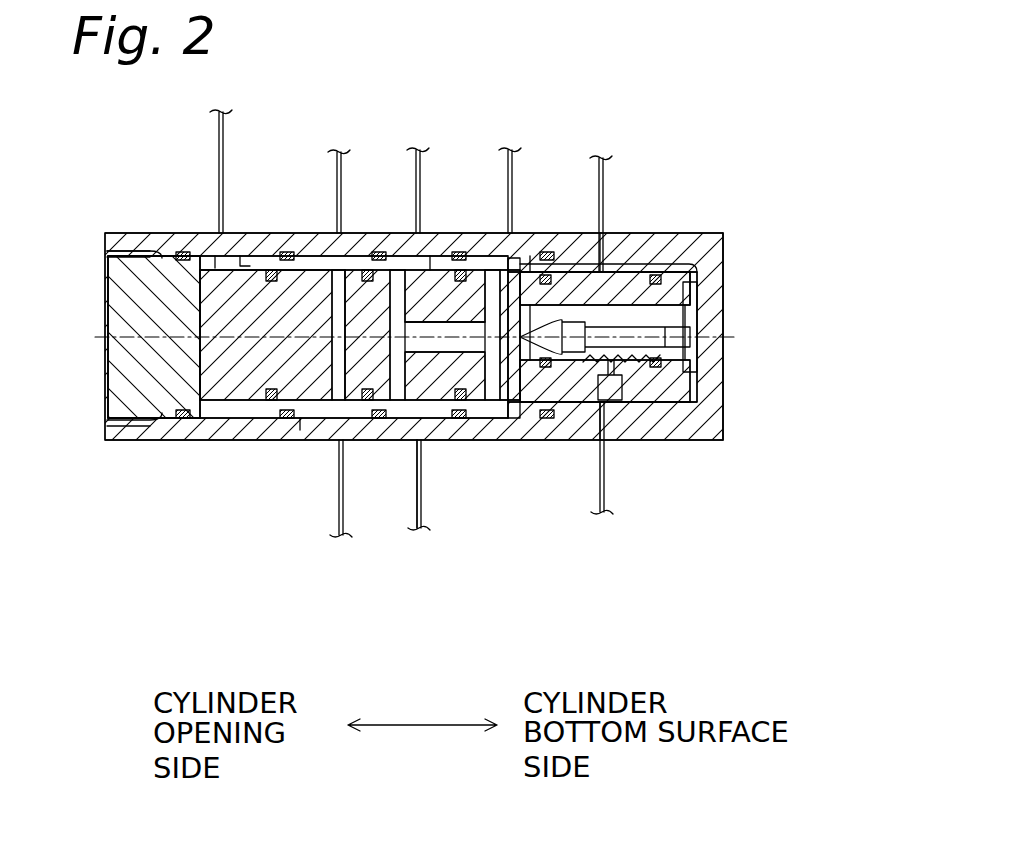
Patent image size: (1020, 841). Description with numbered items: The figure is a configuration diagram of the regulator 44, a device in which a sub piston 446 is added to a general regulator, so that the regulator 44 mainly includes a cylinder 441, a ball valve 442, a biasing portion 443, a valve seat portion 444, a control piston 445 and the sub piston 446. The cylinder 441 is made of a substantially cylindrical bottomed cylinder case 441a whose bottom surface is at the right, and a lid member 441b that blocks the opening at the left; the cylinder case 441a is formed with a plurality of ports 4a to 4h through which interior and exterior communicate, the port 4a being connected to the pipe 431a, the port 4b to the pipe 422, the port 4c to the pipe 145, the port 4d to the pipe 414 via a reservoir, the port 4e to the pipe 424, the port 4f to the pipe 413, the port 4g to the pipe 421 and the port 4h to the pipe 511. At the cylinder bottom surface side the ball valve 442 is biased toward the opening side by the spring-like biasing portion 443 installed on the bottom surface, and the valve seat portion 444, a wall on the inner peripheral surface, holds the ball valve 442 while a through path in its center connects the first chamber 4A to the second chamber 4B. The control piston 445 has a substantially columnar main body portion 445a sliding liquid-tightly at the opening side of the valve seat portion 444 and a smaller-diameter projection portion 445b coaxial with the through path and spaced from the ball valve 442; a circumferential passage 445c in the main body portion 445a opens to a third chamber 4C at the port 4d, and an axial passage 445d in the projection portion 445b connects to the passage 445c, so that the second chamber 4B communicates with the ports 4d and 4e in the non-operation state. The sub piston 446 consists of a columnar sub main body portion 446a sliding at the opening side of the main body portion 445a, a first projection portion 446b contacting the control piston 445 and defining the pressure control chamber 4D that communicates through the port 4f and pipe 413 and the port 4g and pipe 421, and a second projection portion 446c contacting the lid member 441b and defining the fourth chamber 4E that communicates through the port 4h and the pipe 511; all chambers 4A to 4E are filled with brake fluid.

The regulator 44 is at (790, 384).
The cylinder 441 is at (800, 263).
The cylinder case 441a is at (690, 244).
The lid member 441b is at (118, 277).
The ball valve 442 is at (600, 402).
The biasing portion 443 is at (660, 365).
The valve seat portion 444 is at (575, 262).
The control piston 445 is at (563, 645).
The main body portion 445a is at (348, 383).
The projection portion 445b is at (527, 372).
The passage 445c is at (402, 383).
The passage 445d is at (433, 367).
The sub piston 446 is at (196, 572).
The sub main body portion 446a is at (235, 370).
The first projection portion 446b is at (272, 385).
The second projection portion 446c is at (140, 395).
The first chamber 4A is at (680, 335).
The second chamber 4B is at (535, 262).
The third chamber 4C is at (438, 262).
The pressure control chamber 4D is at (273, 268).
The fourth chamber 4E is at (250, 258).
The port 4a is at (610, 262).
The port 4b is at (615, 420).
The port 4c is at (497, 262).
The port 4d is at (395, 262).
The port 4e is at (422, 450).
The port 4f is at (335, 268).
The port 4g is at (310, 432).
The port 4h is at (222, 262).
The pipe 145 is at (513, 172).
The pipe 413 is at (342, 172).
The pipe 414 is at (421, 165).
The pipe 421 is at (336, 525).
The pipe 422 is at (598, 497).
The pipe 424 is at (415, 522).
The pipe 431a is at (604, 190).
The pipe 511 is at (224, 150).